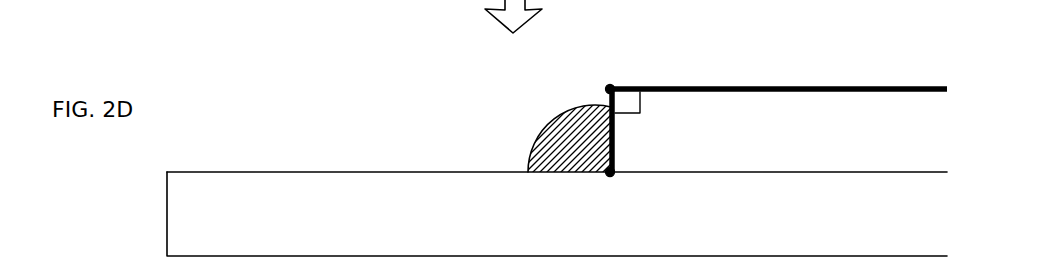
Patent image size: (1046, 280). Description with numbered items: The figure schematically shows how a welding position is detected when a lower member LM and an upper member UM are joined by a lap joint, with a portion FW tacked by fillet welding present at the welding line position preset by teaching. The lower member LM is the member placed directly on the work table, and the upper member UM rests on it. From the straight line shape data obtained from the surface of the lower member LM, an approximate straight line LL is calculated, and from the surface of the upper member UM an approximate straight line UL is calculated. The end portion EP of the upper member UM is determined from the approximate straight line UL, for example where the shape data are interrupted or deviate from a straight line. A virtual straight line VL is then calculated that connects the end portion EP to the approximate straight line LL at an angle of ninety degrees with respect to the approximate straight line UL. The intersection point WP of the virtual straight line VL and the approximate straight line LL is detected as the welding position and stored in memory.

The approximate straight line of the lower member LL is at (309, 172).
The lower member LM is at (866, 212).
The upper member UM is at (866, 130).
The approximate straight line of the upper member UL is at (779, 87).
The virtual straight line VL is at (617, 143).
The portion tacked by fillet welding FW is at (552, 114).
The end portion of the upper member EP is at (610, 88).
The intersection point WP is at (611, 176).